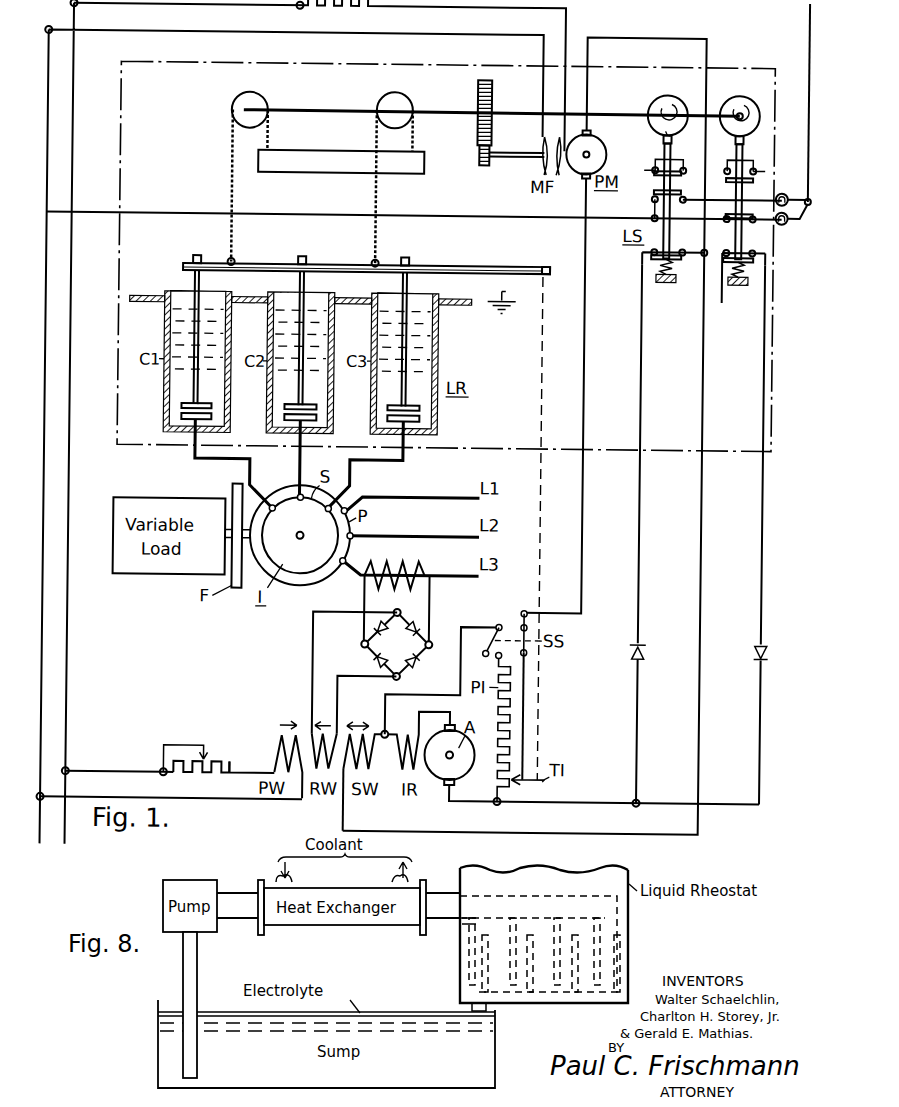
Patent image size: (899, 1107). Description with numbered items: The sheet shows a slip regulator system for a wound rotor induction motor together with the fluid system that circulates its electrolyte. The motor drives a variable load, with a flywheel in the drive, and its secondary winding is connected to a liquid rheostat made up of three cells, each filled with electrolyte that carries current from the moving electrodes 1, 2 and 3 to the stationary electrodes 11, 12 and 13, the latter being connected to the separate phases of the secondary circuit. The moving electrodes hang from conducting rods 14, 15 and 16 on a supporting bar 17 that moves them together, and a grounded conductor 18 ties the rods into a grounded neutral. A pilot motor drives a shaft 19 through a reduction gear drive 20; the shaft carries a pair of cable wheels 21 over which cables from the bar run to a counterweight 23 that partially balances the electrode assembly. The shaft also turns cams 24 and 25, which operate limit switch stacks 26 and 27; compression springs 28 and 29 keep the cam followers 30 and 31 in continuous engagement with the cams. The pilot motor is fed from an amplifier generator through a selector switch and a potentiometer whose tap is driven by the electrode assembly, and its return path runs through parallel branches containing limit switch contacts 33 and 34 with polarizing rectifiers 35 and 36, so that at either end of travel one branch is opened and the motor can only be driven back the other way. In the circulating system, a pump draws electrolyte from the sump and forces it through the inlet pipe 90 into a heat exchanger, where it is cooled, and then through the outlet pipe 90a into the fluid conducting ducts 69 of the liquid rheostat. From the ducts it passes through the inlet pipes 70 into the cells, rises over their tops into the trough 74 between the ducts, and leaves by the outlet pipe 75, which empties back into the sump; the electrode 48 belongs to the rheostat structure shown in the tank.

In FIG. 1, the moving electrode 1 is at (182, 406).
In FIG. 1, the moving electrode 2 is at (286, 407).
In FIG. 1, the moving electrode 3 is at (389, 407).
In FIG. 1, the stationary electrode 11 is at (182, 425).
In FIG. 1, the stationary electrode 12 is at (285, 425).
In FIG. 1, the stationary electrode 13 is at (388, 425).
In FIG. 1, the conducting rod 14 is at (192, 287).
In FIG. 1, the conducting rod 15 is at (301, 265).
In FIG. 1, the conducting rod 16 is at (404, 265).
In FIG. 1, the supporting bar 17 is at (271, 268).
In FIG. 1, the conductor 18 is at (516, 523).
In FIG. 1, the shaft 19 is at (459, 110).
In FIG. 1, the reduction gear drive 20 is at (519, 139).
In FIG. 1, the sprockets or cable wheels 21 is at (258, 100).
In FIG. 1, the counterweight 23 is at (421, 163).
In FIG. 1, the cam 24 is at (670, 95).
In FIG. 1, the cam 25 is at (757, 95).
In FIG. 1, the limit switch stack 26 is at (674, 310).
In FIG. 1, the limit switch stack 27 is at (744, 315).
In FIG. 1, the compression spring 28 is at (672, 270).
In FIG. 1, the compression spring 29 is at (740, 276).
In FIG. 1, the cam follower 30 is at (669, 143).
In FIG. 1, the cam follower 31 is at (741, 148).
In FIG. 1, the limit switch contacts 33 is at (668, 252).
In FIG. 1, the limit switch contacts 34 is at (740, 256).
In FIG. 1, the polarizing rectifier 35 is at (647, 650).
In FIG. 1, the polarizing rectifier 36 is at (772, 652).
In FIG. 8, the electrode of liquid rheostat 48 is at (616, 974).
In FIG. 8, the fluid conducting ducts 69 is at (510, 895).
In FIG. 8, the inlet pipes 70 is at (601, 952).
In FIG. 8, the space or trough 74 is at (470, 929).
In FIG. 8, the outlet pipe 75 is at (490, 1015).
In FIG. 8, the inlet pipe 90 is at (235, 894).
In FIG. 8, the outlet pipe 90a is at (444, 894).